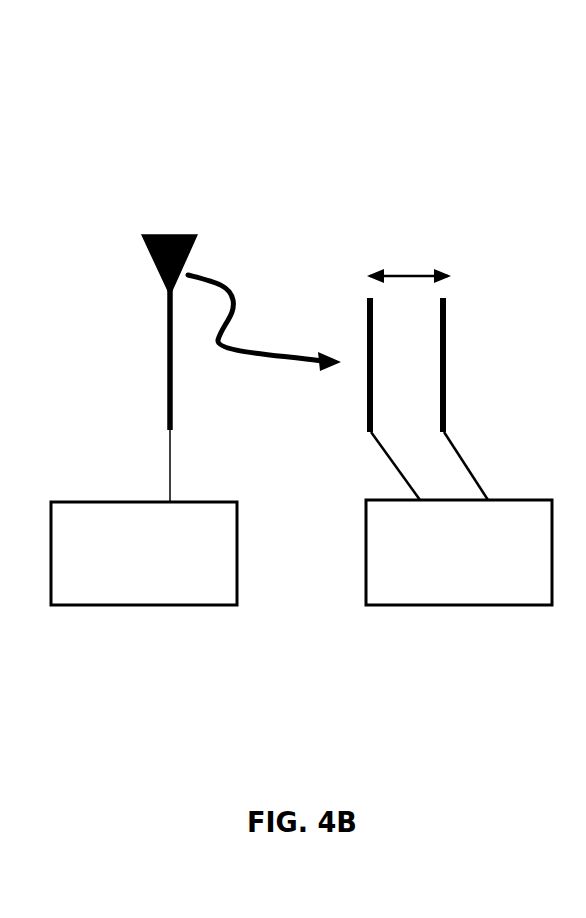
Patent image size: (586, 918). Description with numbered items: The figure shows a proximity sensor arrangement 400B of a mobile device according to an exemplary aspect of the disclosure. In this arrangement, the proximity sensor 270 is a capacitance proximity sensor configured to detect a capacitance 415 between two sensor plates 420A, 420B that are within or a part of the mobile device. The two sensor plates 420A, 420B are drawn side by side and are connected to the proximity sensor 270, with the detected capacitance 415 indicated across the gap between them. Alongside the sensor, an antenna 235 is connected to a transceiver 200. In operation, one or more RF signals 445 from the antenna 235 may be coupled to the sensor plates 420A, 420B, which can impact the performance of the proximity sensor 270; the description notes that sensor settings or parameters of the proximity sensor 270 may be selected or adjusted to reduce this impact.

The proximity sensing system 400B is at (489, 95).
The antenna 235 is at (148, 252).
The transceiver 200 is at (155, 606).
The RF signals 445 is at (277, 361).
The capacitance 415 is at (404, 273).
The sensor plate 420A is at (366, 310).
The sensor plate 420B is at (447, 306).
The proximity sensor 270 is at (458, 606).